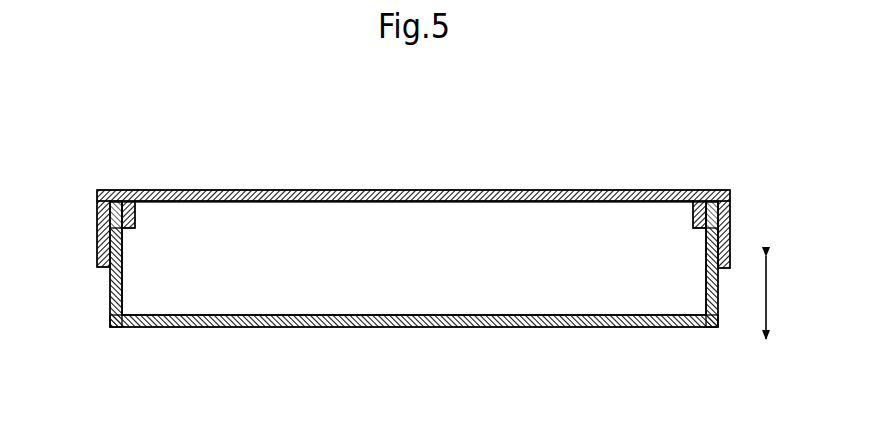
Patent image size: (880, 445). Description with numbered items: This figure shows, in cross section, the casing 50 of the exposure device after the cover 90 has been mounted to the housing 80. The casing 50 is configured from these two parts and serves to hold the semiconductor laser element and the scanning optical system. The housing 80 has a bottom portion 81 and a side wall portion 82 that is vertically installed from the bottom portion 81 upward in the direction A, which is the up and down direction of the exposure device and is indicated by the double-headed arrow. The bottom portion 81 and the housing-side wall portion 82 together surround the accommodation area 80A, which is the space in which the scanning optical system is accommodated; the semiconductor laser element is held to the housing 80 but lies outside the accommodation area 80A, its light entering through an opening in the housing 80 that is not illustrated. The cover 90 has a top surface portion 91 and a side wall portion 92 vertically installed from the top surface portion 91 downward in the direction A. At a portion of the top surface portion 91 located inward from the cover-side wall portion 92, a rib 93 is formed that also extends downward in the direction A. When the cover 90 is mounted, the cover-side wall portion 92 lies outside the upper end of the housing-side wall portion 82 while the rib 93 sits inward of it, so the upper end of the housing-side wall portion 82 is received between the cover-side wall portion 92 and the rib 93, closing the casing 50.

The casing 50 is at (406, 241).
The cover 90 is at (520, 189).
The top surface portion 91 is at (371, 190).
The cover-side wall portion 92 is at (100, 223).
The rib 93 is at (136, 222).
The housing 80 is at (519, 329).
The bottom portion 81 is at (370, 328).
The housing-side wall portion 82 is at (111, 297).
The accommodation area 80A is at (183, 300).
The direction A is at (780, 297).